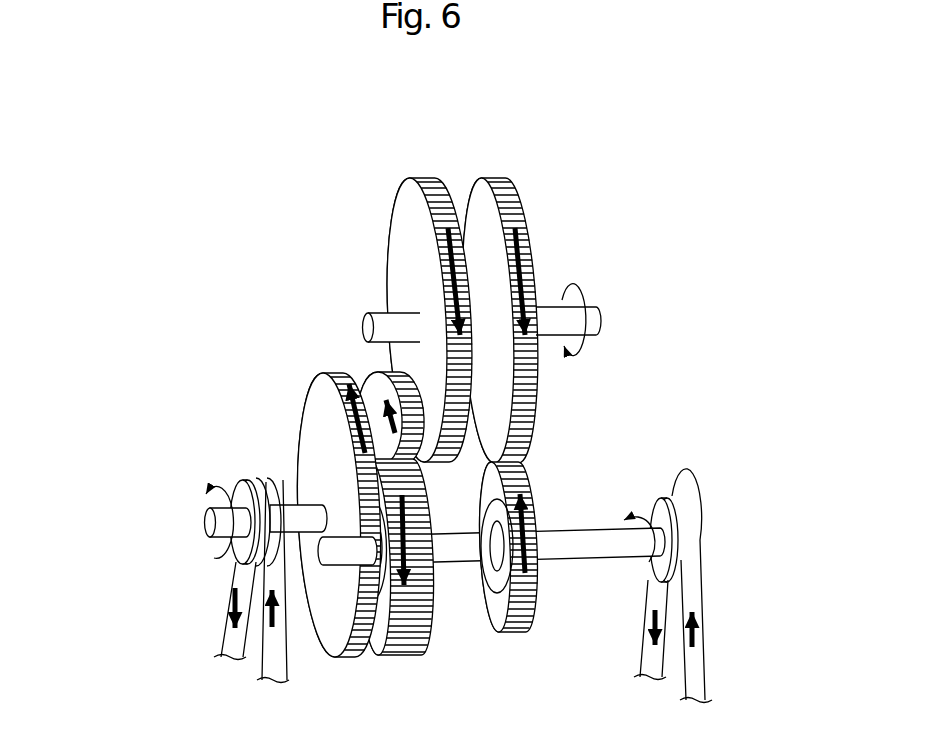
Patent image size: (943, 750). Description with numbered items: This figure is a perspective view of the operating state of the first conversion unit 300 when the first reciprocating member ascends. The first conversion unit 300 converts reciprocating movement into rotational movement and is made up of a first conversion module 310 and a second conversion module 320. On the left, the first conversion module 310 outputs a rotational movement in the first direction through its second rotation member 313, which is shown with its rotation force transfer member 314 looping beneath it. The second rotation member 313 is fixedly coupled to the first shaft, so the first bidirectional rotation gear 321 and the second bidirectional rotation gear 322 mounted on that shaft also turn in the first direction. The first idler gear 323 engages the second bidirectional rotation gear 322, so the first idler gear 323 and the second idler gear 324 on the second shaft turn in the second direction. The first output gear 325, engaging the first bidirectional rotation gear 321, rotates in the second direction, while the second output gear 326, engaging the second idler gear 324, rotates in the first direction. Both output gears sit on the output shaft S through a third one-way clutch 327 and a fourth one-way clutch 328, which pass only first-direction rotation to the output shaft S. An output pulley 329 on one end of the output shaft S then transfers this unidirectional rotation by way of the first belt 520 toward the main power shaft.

The first conversion unit 300 is at (133, 284).
The first conversion module 310 is at (192, 481).
The second rotation member 313 is at (238, 490).
The rotation force transfer member 314 is at (233, 582).
The second conversion module 320 is at (302, 277).
The first bidirectional rotation gear 321 is at (313, 403).
The second bidirectional rotation gear 322 is at (374, 378).
The first idler gear 323 is at (429, 179).
The second idler gear 324 is at (506, 181).
The first output gear 325 is at (425, 616).
The second output gear 326 is at (517, 628).
The third one-way clutch 327 is at (377, 606).
The fourth one-way clutch 328 is at (495, 592).
The output pulley 329 is at (664, 506).
The first belt 520 is at (698, 585).
The output shaft S is at (594, 560).